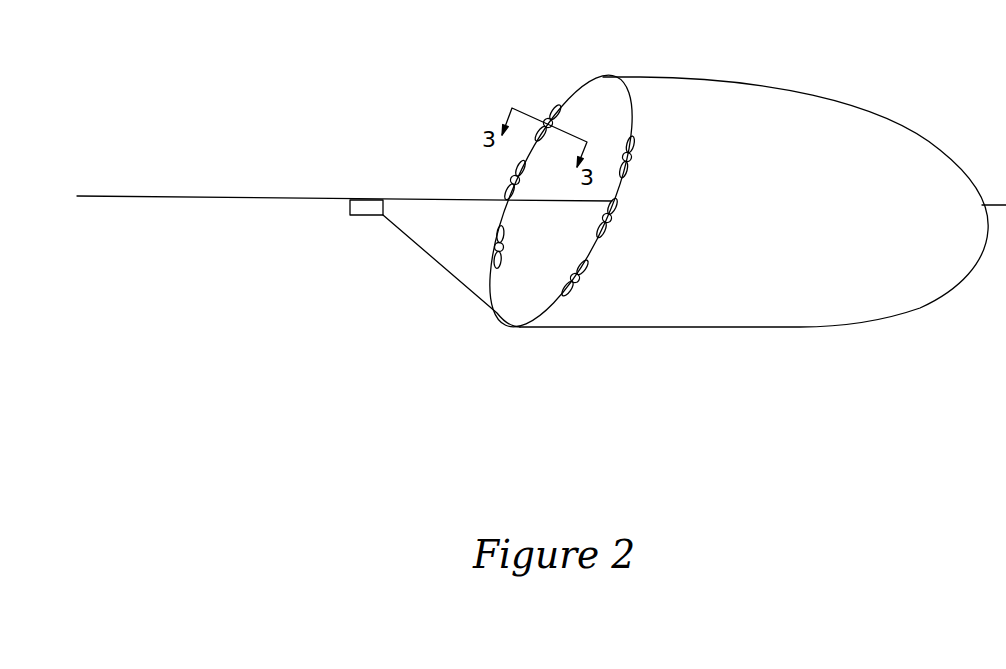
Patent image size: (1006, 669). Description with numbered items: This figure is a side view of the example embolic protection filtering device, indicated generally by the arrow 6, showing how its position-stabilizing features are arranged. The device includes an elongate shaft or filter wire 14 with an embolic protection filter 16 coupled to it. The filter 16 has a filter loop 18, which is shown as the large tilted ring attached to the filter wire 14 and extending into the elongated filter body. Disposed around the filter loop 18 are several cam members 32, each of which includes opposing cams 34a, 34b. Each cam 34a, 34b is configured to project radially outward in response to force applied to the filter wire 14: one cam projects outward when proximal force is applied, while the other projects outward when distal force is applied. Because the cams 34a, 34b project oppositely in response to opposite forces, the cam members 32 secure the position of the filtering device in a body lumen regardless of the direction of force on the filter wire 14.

The propulsion system / ring-wing assembly 6 is at (447, 75).
The filter wire 14 is at (218, 197).
The embolic protection filter 16 is at (503, 213).
The filter loop 18 is at (578, 90).
The cam member 32 is at (505, 252).
The cam 34a is at (492, 258).
The cam 34b is at (496, 240).